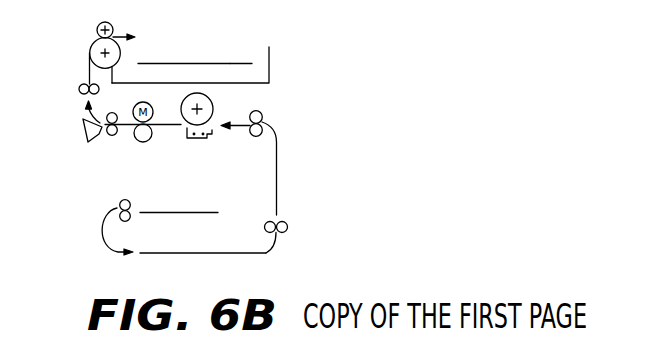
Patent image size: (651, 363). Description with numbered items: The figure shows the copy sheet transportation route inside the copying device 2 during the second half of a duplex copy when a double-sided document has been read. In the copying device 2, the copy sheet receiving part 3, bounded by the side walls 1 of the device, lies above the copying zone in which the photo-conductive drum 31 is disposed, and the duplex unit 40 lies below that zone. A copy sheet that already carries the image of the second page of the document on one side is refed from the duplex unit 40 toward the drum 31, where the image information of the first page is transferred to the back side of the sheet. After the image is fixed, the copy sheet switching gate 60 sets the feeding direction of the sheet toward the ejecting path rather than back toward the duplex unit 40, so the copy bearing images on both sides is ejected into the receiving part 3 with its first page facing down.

The side wall 1 is at (230, 64).
The copying device 2 is at (155, 62).
The copy sheet receiving part 3 is at (270, 68).
The photo-conductive drum 31 is at (182, 125).
The duplex unit 40 is at (289, 252).
The copy sheet switching gate 60 is at (82, 135).